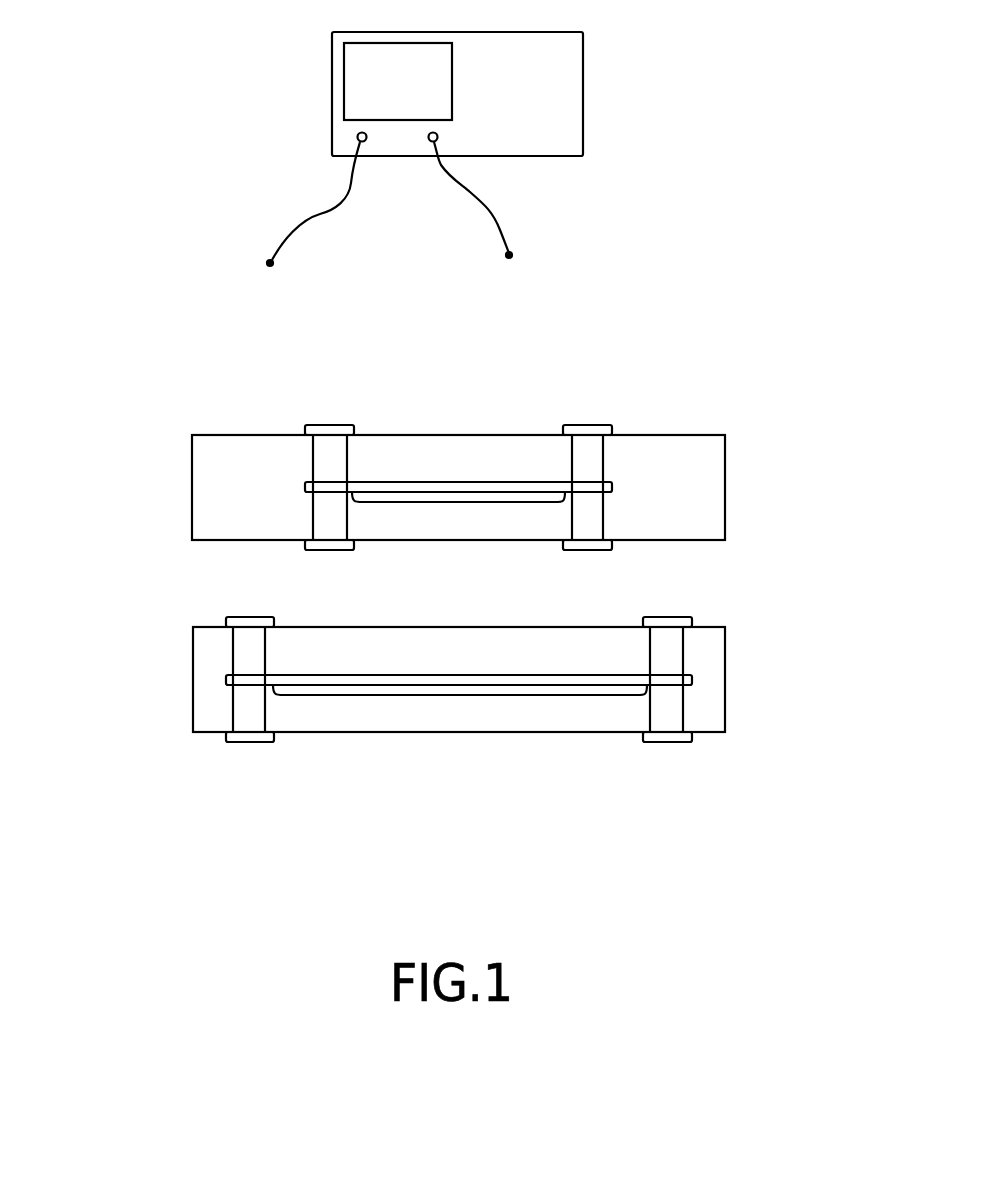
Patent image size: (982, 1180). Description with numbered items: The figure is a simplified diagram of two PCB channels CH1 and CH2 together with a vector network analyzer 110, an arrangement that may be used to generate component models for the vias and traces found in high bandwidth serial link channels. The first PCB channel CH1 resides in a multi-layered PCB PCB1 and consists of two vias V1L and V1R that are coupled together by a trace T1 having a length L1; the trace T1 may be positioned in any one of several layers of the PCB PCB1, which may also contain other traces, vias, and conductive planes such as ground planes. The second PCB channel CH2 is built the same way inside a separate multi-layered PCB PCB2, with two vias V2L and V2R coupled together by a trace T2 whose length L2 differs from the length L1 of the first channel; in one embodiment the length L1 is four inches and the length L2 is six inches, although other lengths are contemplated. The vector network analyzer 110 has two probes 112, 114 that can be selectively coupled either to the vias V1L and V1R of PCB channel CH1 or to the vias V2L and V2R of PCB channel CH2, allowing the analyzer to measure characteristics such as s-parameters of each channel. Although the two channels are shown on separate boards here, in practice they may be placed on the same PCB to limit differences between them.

The vector network analyzer 110 is at (581, 40).
The probe 112 is at (312, 218).
The probe 114 is at (494, 214).
The PCB channel CH1 is at (327, 411).
The PCB channel CH2 is at (612, 613).
The multi-layered PCB PCB1 is at (192, 440).
The multi-layered PCB PCB2 is at (193, 640).
The via V1L is at (326, 462).
The via V1R is at (596, 462).
The via V2L is at (248, 713).
The via V2R is at (677, 712).
The trace T1 is at (482, 482).
The trace T2 is at (348, 675).
The length L1 is at (460, 502).
The length L2 is at (460, 695).